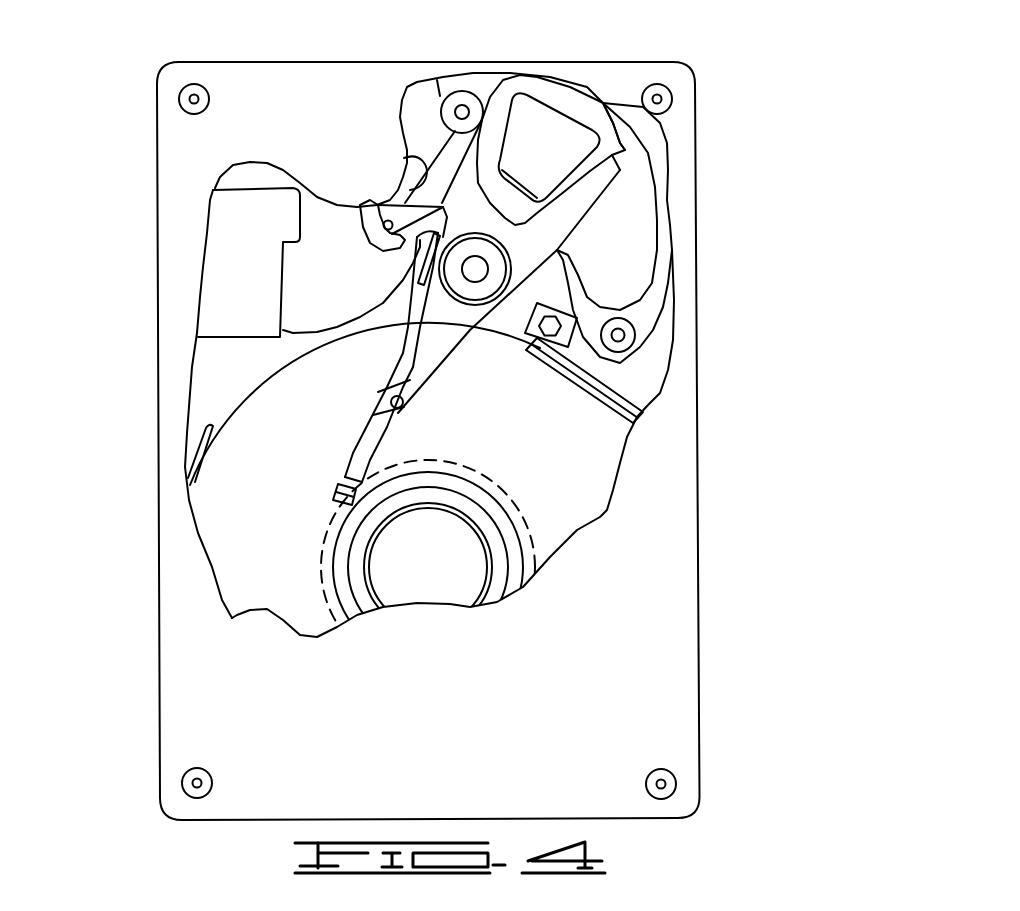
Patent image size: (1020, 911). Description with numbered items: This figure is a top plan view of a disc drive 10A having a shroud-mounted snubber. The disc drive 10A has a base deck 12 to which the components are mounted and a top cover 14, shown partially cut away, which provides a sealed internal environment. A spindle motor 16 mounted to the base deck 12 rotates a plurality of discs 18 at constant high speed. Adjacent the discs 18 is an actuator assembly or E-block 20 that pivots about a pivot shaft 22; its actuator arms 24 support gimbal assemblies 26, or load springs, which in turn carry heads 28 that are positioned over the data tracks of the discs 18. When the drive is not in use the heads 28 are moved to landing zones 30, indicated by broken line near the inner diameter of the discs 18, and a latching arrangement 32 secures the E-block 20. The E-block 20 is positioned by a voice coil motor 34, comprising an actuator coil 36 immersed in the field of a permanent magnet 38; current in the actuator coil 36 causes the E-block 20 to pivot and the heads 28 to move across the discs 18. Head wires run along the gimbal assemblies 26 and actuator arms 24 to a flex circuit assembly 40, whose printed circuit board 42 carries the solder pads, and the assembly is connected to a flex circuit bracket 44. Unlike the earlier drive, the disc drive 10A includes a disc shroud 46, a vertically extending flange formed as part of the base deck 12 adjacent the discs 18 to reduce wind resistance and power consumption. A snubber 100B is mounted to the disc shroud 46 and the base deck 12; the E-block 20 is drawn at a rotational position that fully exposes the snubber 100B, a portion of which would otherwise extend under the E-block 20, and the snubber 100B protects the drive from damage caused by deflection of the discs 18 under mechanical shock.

The disc drive 10A is at (183, 43).
The base deck 12 is at (217, 380).
The top cover 14 is at (180, 190).
The spindle motor 16 is at (439, 582).
The discs 18 is at (582, 477).
The actuator assembly 20 is at (441, 336).
The pivot shaft 22 is at (474, 282).
The actuator arms 24 is at (410, 363).
The gimbal assemblies 26 is at (370, 443).
The heads 28 is at (338, 493).
The landing zones 30 is at (328, 530).
The latching arrangement 32 is at (400, 170).
The voice coil motor 34 is at (529, 116).
The actuator coil 36 is at (610, 157).
The permanent magnet 38 is at (520, 137).
The flex circuit assembly 40 is at (354, 317).
The printed circuit board 42 is at (428, 263).
The flex circuit bracket 44 is at (230, 275).
The disc shroud 46 is at (207, 427).
The snubber 100B is at (547, 363).